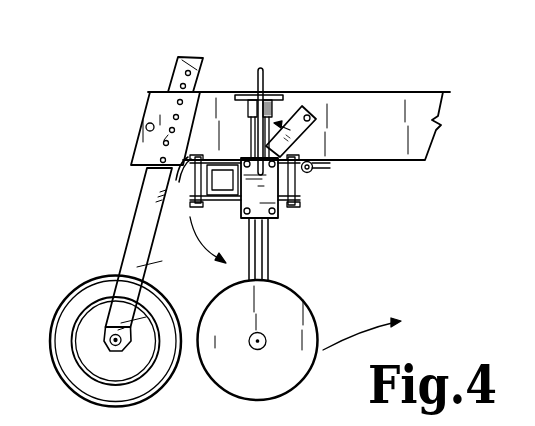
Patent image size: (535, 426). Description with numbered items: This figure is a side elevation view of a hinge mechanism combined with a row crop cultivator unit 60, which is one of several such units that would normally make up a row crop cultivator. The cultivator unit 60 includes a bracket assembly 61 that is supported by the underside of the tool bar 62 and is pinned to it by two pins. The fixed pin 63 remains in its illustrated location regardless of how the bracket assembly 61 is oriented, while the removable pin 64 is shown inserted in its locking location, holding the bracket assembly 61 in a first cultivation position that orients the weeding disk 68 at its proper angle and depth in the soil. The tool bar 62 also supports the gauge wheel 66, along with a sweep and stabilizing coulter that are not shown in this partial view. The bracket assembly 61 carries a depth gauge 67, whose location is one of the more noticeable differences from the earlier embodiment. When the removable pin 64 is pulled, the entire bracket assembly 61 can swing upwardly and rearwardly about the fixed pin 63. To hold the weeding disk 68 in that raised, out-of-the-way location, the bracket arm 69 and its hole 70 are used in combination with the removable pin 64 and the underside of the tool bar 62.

The row crop cultivator unit 60 is at (292, 216).
The bracket assembly 61 is at (296, 172).
The tool bar 62 is at (392, 95).
The fixed pin 63 is at (313, 169).
The removable pin 64 is at (184, 190).
The gauge wheel 66 is at (58, 370).
The depth gauge 67 is at (268, 84).
The weeding disk 68 is at (299, 373).
The bracket arm 69 is at (306, 105).
The hole 70 is at (302, 112).